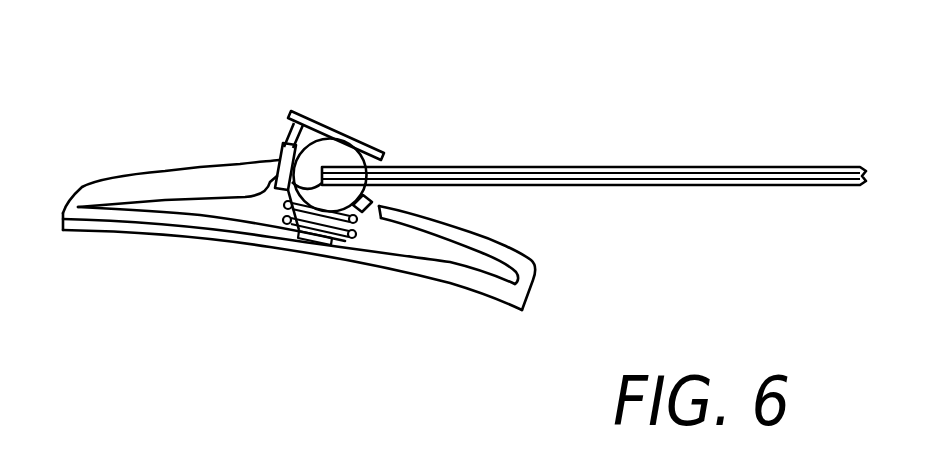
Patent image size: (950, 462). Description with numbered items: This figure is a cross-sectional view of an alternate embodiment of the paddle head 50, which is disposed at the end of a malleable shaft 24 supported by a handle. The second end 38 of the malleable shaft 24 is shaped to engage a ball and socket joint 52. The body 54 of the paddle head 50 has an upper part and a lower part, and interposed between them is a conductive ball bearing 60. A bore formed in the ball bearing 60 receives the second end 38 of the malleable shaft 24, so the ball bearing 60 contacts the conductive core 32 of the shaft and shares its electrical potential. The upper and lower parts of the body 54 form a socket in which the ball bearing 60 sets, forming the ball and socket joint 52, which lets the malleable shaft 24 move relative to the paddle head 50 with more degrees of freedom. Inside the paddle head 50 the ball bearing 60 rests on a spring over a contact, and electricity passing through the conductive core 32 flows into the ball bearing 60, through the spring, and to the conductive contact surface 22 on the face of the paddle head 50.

The conductive contact surface 22 is at (407, 278).
The malleable shaft 24 is at (611, 166).
The conductive core 32 is at (522, 176).
The second end 38 is at (300, 232).
The paddle head 50 is at (155, 93).
The ball and socket joint 52 is at (293, 142).
The body 54 is at (100, 180).
The conductive ball bearing 60 is at (341, 150).